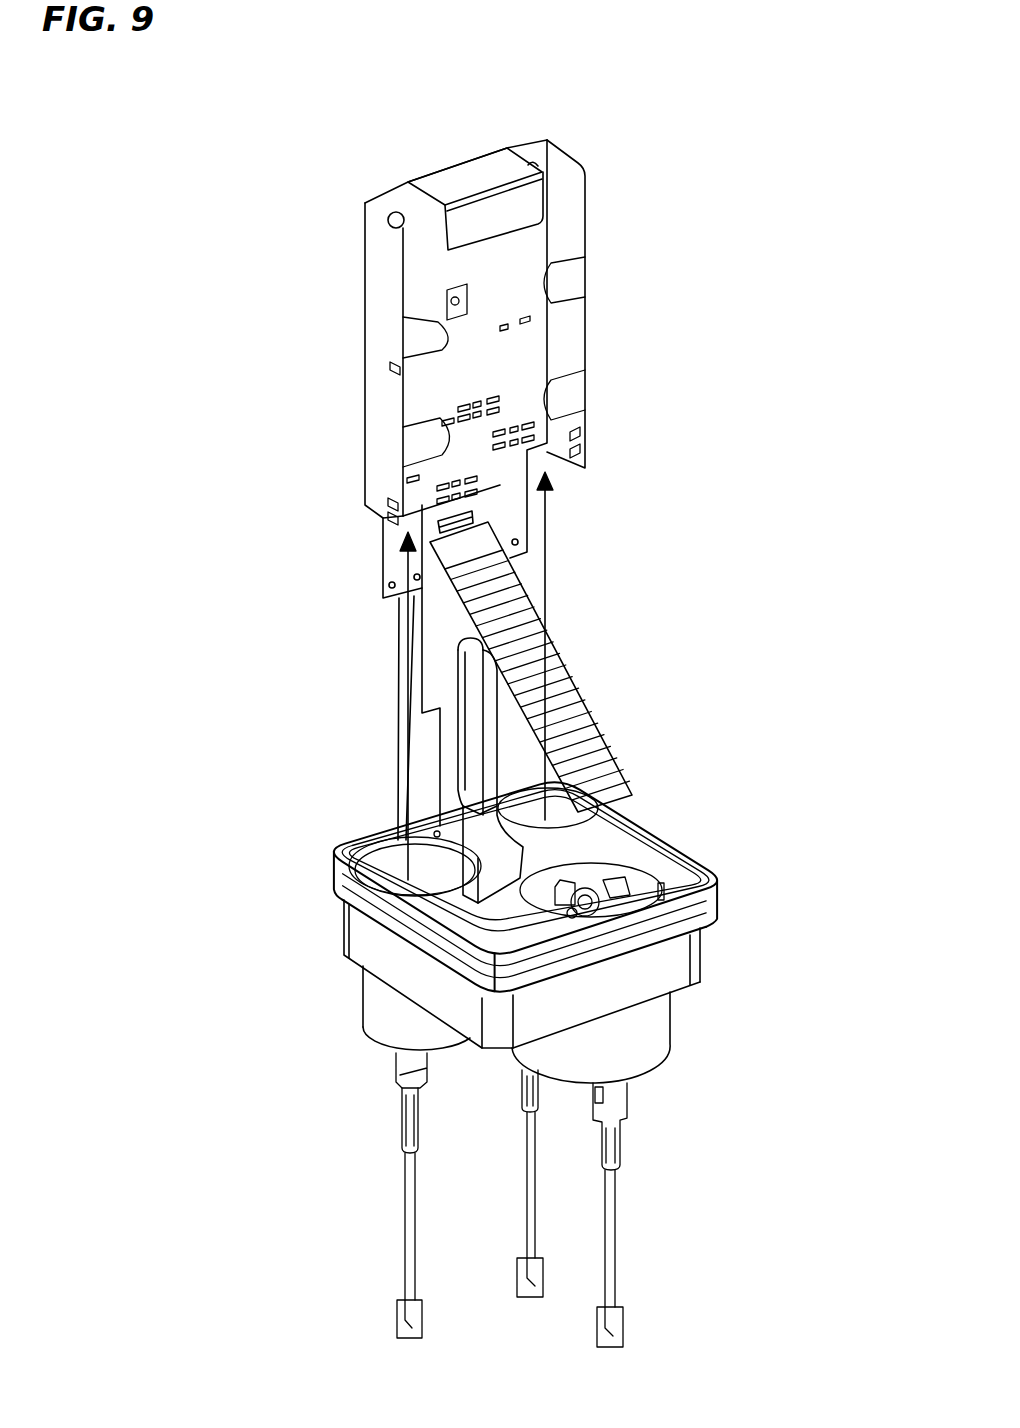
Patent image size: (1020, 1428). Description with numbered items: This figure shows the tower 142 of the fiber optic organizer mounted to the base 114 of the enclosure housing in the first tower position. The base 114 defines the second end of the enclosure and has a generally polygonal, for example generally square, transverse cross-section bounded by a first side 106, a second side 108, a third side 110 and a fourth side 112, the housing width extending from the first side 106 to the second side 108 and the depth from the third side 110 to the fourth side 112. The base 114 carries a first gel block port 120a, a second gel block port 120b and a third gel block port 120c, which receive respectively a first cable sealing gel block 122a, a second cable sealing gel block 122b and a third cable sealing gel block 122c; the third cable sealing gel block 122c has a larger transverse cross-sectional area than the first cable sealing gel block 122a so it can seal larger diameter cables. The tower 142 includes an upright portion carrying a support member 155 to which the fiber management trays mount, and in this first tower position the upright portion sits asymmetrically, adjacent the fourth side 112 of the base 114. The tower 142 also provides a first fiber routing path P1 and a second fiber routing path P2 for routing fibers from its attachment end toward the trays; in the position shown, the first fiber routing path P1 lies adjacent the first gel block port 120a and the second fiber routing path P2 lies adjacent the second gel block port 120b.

The first side 106 is at (633, 812).
The second side 108 is at (404, 930).
The third side 110 is at (617, 967).
The fourth side 112 is at (378, 832).
The base 114 is at (704, 955).
The first gel block port 120a is at (392, 882).
The second gel block port 120b is at (545, 842).
The third gel block port 120c is at (585, 865).
The first cable sealing gel block 122a is at (368, 1052).
The second cable sealing gel block 122b is at (509, 1056).
The third cable sealing gel block 122c is at (645, 1078).
The tower 142 is at (365, 252).
The support member 155 is at (570, 677).
The first fiber routing path P1 is at (405, 630).
The second fiber routing path P2 is at (548, 572).